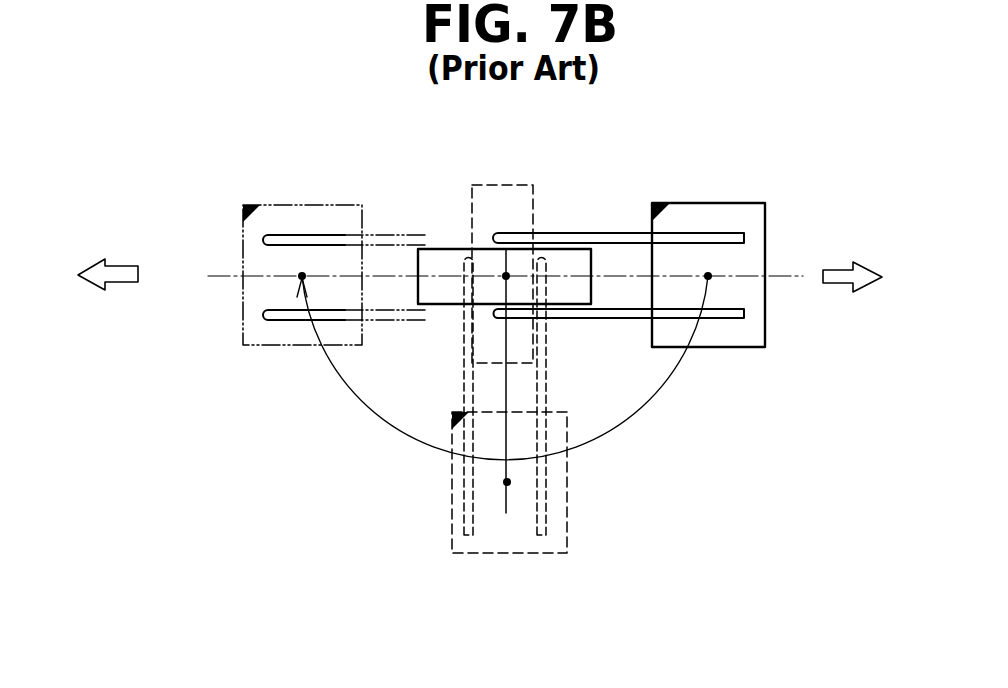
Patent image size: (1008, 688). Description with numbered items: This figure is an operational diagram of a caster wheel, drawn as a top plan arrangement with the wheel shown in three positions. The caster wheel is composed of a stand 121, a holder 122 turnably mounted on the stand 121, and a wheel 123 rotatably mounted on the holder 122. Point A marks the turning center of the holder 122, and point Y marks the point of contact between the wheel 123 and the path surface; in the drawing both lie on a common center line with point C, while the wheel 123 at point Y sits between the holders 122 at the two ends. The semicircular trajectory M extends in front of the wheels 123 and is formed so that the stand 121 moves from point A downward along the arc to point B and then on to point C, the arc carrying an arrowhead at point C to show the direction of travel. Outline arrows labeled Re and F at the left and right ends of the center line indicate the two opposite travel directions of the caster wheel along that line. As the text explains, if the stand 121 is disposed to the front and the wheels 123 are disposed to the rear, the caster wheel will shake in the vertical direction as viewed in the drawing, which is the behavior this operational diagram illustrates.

The stand 121 is at (292, 205).
The holder 122 is at (343, 235).
The wheel 123 is at (425, 249).
The point A is at (708, 276).
The point B is at (507, 482).
The point C is at (302, 276).
The point Y is at (506, 276).
The semicircular trajectory M is at (635, 440).
The rearward direction Re is at (125, 275).
The forward direction F is at (862, 277).